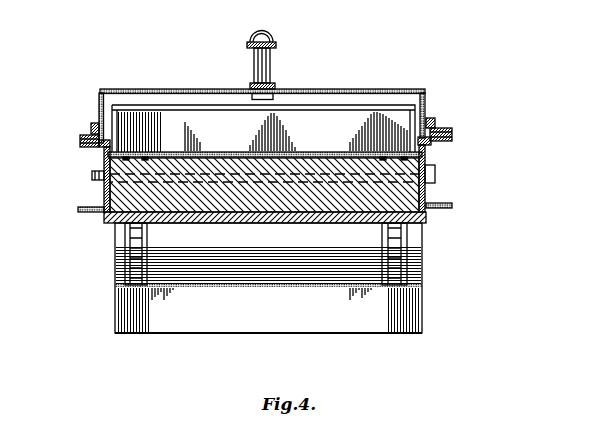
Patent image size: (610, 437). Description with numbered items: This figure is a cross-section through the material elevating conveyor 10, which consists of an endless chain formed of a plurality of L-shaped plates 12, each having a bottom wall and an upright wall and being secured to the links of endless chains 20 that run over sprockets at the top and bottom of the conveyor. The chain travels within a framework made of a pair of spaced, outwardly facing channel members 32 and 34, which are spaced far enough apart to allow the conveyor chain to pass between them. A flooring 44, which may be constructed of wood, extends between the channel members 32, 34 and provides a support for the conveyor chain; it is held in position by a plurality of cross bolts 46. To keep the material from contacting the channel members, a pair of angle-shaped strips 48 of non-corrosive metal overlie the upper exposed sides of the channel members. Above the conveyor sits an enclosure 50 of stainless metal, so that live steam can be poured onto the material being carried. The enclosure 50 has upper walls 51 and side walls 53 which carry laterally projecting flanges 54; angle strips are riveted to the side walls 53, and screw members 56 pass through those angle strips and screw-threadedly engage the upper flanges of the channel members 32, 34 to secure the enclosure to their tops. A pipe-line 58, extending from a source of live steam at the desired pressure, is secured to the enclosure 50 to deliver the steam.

The conveyor 10 is at (318, 148).
The L-shaped plates 12 is at (350, 122).
The endless chains 20 is at (135, 152).
The channel member 32 is at (104, 196).
The channel member 34 is at (445, 207).
The flooring 44 is at (205, 181).
The cross bolts 46 is at (436, 176).
The angle-shaped strips 48 is at (99, 146).
The enclosure 50 is at (267, 94).
The upper walls 51 is at (205, 89).
The side walls 53 is at (99, 100).
The laterally projecting flanges 54 is at (80, 140).
The screw members 56 is at (91, 128).
The pipe-line 58 is at (272, 48).